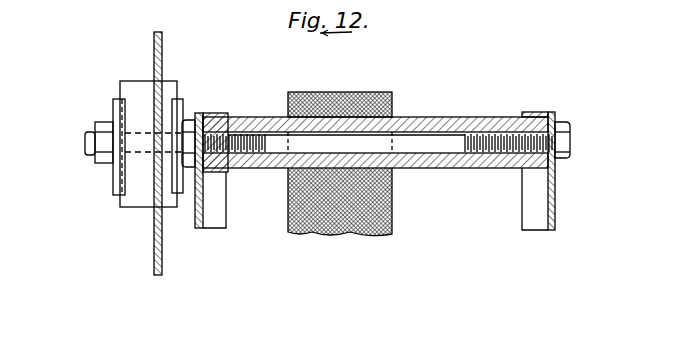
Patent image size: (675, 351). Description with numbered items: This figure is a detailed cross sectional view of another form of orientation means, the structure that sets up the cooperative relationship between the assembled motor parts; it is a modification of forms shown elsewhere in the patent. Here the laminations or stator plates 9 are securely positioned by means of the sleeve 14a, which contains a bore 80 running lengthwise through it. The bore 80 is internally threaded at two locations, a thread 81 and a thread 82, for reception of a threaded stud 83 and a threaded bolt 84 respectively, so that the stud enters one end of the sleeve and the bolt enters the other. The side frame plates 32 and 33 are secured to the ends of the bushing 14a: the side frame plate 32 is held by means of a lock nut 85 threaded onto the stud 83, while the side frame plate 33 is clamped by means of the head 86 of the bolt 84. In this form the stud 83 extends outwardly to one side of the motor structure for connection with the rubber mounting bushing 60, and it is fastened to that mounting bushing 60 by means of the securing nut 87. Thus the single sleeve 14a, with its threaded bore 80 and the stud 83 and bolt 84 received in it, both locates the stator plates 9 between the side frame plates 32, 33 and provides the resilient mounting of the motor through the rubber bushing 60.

The stator plates 9 is at (347, 93).
The sleeve 14a is at (413, 118).
The side frame plate 32 is at (215, 218).
The side frame plate 33 is at (537, 218).
The rubber mounting bushing 60 is at (125, 200).
The bore 80 is at (422, 147).
The internal thread 81 is at (240, 172).
The internal thread 82 is at (476, 168).
The threaded stud 83 is at (240, 118).
The threaded bolt 84 is at (498, 132).
The lock nut 85 is at (188, 125).
The head 86 is at (563, 140).
The securing nut 87 is at (100, 125).